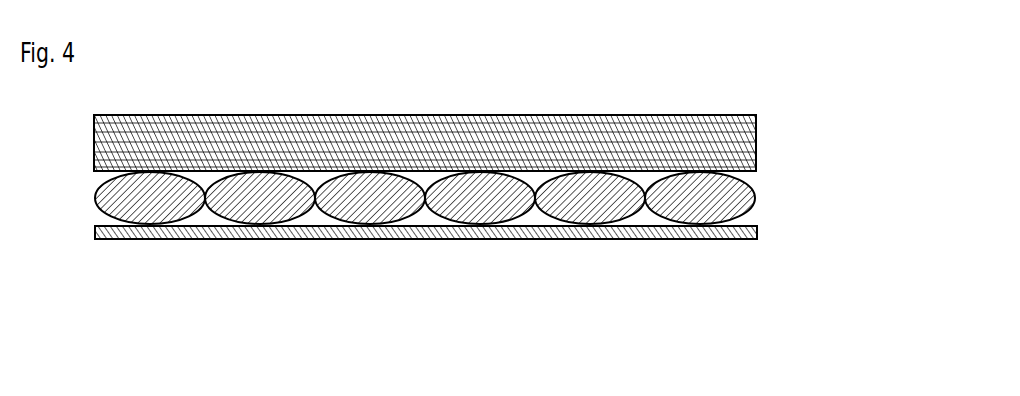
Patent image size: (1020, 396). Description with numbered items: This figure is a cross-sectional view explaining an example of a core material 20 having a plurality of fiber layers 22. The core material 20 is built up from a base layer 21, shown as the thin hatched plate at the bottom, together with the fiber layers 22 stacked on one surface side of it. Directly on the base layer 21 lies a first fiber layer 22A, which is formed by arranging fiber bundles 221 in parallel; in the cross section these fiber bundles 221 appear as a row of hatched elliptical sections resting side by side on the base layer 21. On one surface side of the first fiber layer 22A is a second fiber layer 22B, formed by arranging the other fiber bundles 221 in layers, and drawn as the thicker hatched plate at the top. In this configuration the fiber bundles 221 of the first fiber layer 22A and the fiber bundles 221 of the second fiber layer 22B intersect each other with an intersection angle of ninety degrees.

The core material 20 is at (507, 170).
The base layer 21 is at (757, 238).
The fiber layers 22 is at (507, 175).
The first fiber layer 22A is at (481, 175).
The second fiber layer 22B is at (763, 115).
The fiber bundles 221 is at (490, 115).